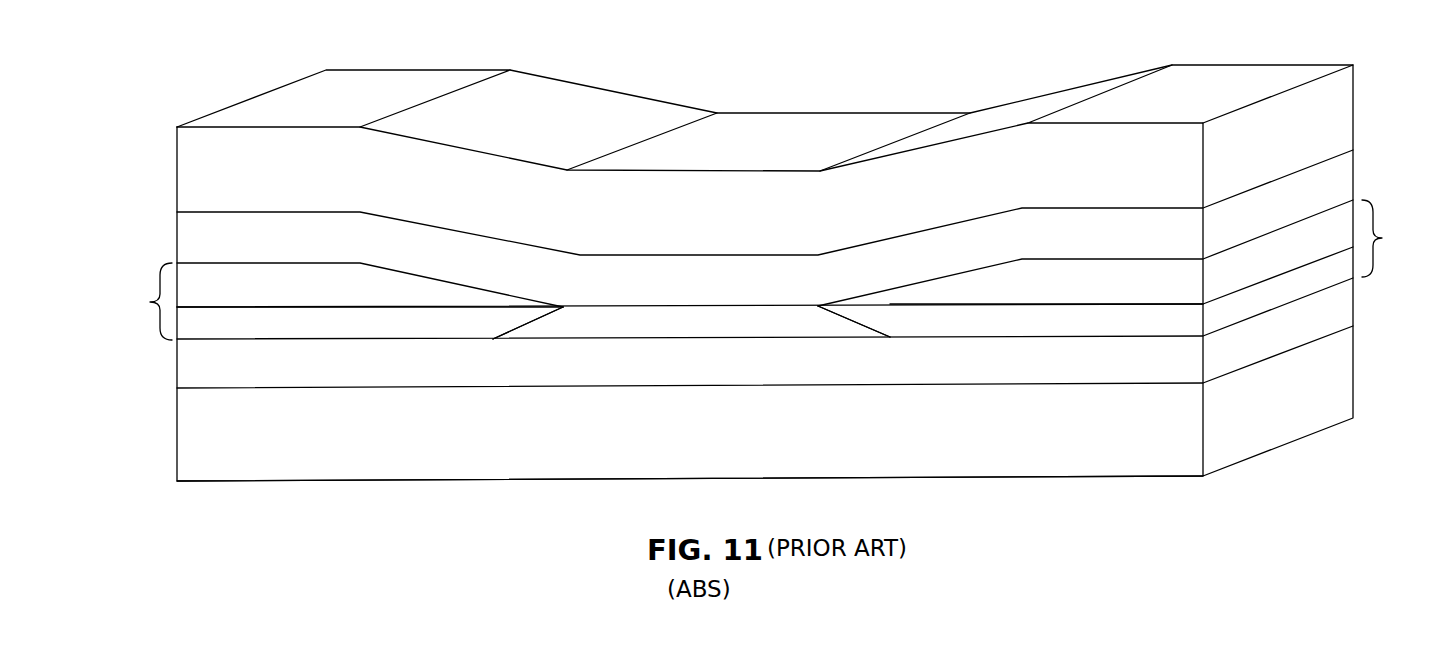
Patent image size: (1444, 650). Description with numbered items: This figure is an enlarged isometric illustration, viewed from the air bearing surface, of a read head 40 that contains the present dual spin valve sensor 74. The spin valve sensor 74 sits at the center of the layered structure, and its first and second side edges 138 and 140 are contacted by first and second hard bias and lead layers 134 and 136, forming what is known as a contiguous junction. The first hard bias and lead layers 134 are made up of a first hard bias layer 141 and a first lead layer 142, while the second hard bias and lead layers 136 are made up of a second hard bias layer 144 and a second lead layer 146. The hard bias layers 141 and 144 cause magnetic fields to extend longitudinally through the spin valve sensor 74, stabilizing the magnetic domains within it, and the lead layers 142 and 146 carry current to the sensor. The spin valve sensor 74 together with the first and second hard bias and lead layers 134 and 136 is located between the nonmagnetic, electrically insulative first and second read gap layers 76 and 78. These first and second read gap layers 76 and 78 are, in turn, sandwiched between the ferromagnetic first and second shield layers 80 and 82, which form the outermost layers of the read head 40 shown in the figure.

The read head 40 is at (840, 86).
The dual spin valve sensor 74 is at (600, 306).
The first read gap layer 76 is at (872, 368).
The second read gap layer 78 is at (425, 243).
The first shield layer 80 is at (338, 467).
The second shield layer 82 is at (620, 103).
The first hard bias and lead layers 134 is at (136, 301).
The second hard bias and lead layers 136 is at (1396, 238).
The first side edge 138 is at (518, 327).
The second side edge 140 is at (870, 325).
The first hard bias layer 141 is at (220, 325).
The first lead layer 142 is at (220, 277).
The second hard bias layer 144 is at (1152, 322).
The second lead layer 146 is at (1151, 272).